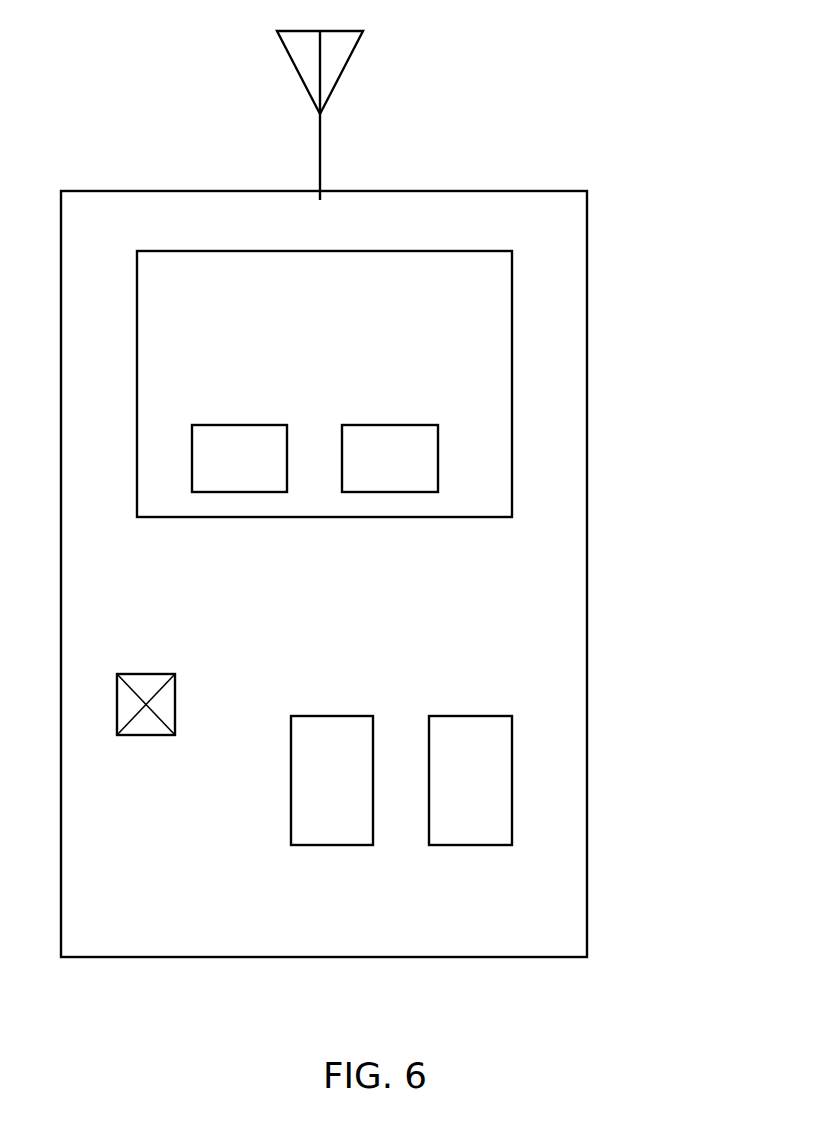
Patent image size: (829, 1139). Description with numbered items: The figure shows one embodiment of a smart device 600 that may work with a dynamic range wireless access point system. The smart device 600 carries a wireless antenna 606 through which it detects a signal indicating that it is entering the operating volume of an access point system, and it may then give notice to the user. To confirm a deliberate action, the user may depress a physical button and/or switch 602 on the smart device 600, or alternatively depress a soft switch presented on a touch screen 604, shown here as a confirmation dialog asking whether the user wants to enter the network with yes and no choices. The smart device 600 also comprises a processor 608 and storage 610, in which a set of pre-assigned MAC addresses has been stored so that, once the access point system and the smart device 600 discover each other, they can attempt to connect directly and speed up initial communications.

The smart device 600 is at (588, 107).
The physical button and/or switch 602 is at (176, 705).
The touch screen 604 is at (512, 385).
The wireless antenna 606 is at (336, 75).
The processor 608 is at (347, 791).
The storage 610 is at (486, 791).